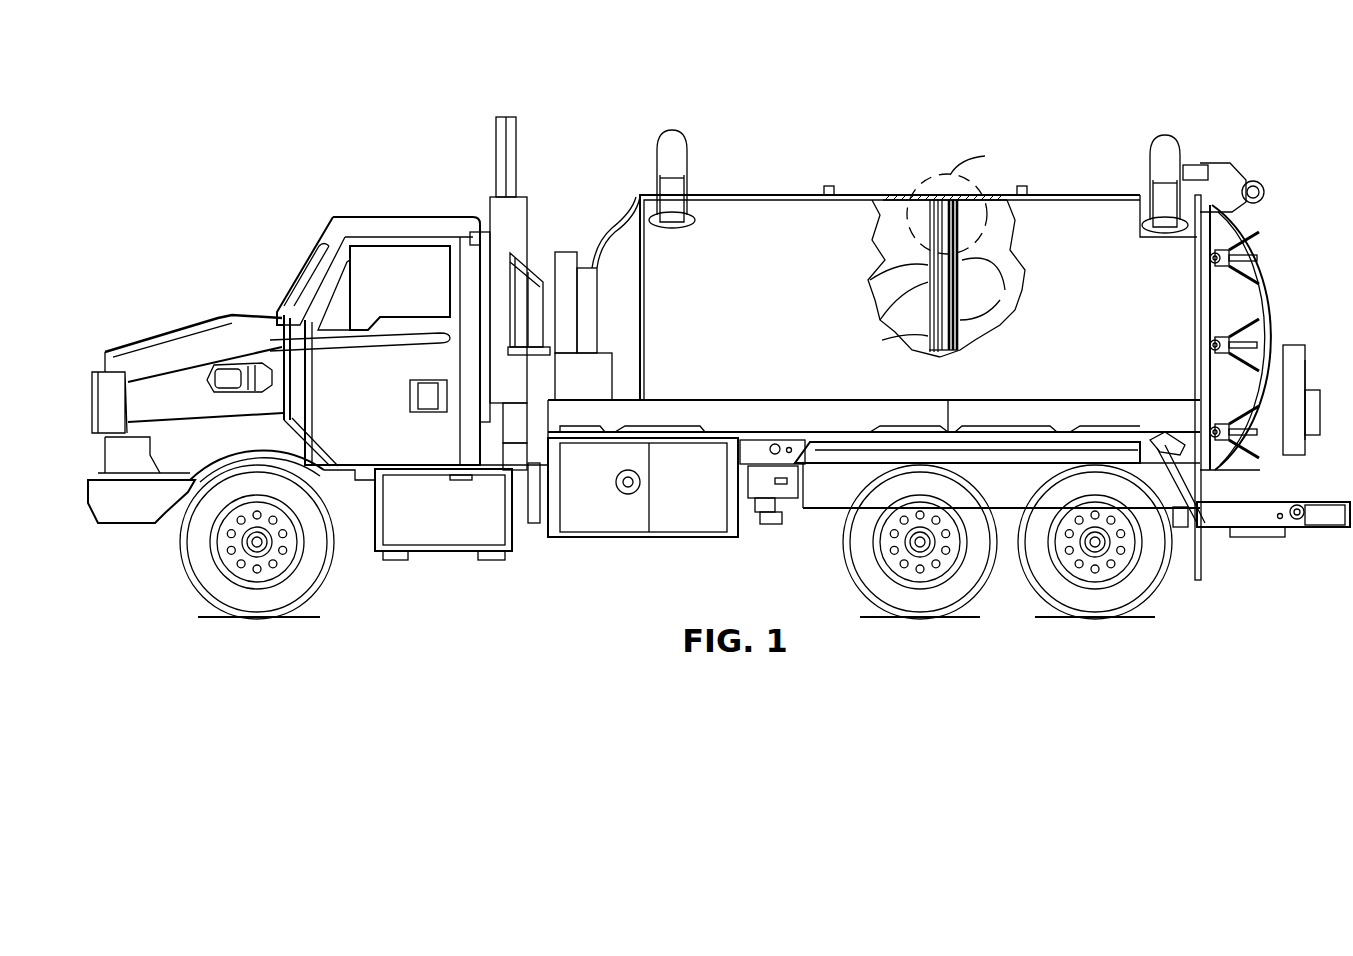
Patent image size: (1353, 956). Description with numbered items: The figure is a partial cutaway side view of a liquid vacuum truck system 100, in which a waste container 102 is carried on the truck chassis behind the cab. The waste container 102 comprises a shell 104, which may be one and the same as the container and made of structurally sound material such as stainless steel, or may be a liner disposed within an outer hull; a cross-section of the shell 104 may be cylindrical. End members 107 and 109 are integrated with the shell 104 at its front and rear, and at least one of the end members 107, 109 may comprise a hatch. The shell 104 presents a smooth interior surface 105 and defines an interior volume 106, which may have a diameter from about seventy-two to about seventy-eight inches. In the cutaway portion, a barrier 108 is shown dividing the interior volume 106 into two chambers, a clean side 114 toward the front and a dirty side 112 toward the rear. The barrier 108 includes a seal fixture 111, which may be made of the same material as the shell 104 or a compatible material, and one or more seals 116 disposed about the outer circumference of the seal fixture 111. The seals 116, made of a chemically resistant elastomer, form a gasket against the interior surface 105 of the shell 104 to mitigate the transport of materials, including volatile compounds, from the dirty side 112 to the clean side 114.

The liquid vacuum truck system 100 is at (253, 70).
The waste container 102 is at (1065, 195).
The shell 104 is at (785, 195).
The smooth interior surface 105 is at (1045, 205).
The interior volume 106 is at (982, 318).
The end member 107 is at (630, 225).
The barrier 108 is at (920, 340).
The end member 109 is at (1265, 255).
The seal fixture 111 is at (925, 292).
The dirty side 112 is at (1000, 320).
The clean side 114 is at (890, 272).
The seals 116 is at (940, 357).